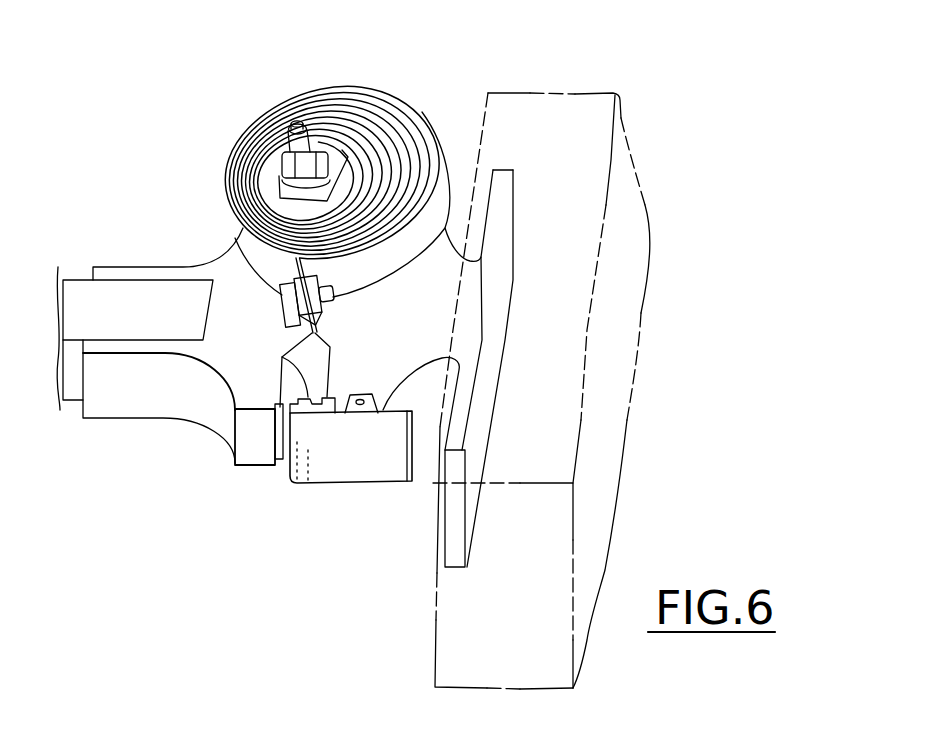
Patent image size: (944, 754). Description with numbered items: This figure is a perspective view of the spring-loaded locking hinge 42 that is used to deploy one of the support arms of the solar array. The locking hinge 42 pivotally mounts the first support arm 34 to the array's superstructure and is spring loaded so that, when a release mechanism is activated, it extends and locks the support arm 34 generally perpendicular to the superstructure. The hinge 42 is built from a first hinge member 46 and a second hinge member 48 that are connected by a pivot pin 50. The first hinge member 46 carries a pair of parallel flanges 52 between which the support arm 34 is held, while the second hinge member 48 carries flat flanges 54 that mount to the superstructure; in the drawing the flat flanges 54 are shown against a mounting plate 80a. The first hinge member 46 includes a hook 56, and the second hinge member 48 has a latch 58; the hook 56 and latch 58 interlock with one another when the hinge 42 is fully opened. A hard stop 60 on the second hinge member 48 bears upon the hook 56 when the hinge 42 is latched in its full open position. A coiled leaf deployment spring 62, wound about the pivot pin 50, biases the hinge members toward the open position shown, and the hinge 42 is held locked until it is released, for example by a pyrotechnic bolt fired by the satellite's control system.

The first support arm 34 is at (77, 283).
The first spring-biased locking hinge 42 is at (233, 511).
The first hinge member 46 is at (133, 408).
The second hinge member 48 is at (440, 325).
The pivot pin 50 is at (298, 124).
The parallel flanges 52 is at (133, 267).
The flat flanges 54 is at (503, 183).
The hook 56 is at (282, 357).
The latch 58 is at (287, 408).
The hard stop 60 is at (323, 397).
The coiled leaf deployment spring 62 is at (268, 113).
The support plate 80a is at (630, 325).